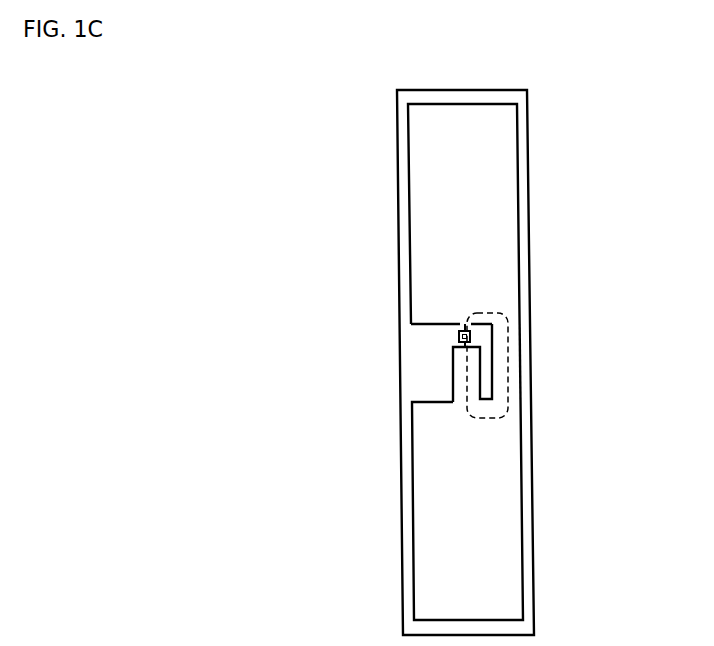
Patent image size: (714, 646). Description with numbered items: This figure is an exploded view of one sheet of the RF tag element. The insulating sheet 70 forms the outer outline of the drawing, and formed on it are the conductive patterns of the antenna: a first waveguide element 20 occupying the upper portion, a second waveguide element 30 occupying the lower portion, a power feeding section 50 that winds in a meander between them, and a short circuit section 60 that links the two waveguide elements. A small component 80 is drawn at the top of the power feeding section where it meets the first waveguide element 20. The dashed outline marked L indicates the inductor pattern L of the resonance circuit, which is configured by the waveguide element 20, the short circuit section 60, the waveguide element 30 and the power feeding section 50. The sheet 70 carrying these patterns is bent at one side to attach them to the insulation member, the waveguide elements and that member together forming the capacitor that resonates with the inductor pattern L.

The waveguide element 20 is at (485, 212).
The waveguide element 30 is at (487, 495).
The power feeding section 50 is at (453, 377).
The short circuit section 60 is at (513, 378).
The insulating sheet 70 is at (400, 252).
The lumped element (matching component) 80 is at (458, 335).
The inductor pattern L is at (507, 336).